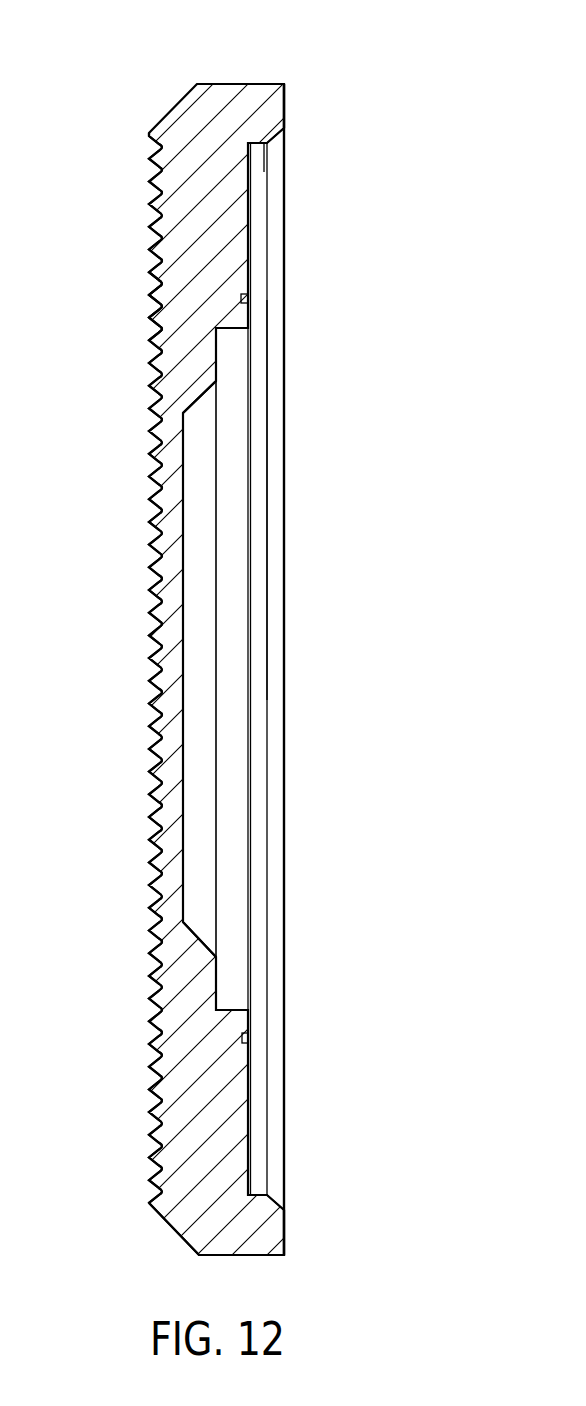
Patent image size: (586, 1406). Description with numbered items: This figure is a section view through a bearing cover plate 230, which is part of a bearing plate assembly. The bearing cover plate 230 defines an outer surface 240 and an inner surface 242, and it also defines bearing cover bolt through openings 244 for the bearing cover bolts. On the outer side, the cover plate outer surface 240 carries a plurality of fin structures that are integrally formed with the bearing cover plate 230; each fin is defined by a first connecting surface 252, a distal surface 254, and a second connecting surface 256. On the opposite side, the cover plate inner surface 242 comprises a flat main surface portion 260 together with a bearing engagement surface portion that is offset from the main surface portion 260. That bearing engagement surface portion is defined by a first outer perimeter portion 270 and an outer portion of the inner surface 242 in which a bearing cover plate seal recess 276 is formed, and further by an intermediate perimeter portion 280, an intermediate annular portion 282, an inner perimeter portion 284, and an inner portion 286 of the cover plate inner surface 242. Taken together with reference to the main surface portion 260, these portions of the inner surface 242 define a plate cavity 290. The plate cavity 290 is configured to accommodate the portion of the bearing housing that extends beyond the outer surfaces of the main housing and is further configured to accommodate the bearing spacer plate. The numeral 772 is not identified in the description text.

The bearing cover plate 230 is at (241, 73).
The outer surface 240 is at (150, 128).
The inner surface 242 is at (284, 92).
The bearing cover bolt through openings 244 is at (283, 222).
The first connecting surface 252 is at (150, 309).
The distal surface 254 is at (156, 282).
The second connecting surface 256 is at (150, 340).
The main surface portion 260 is at (302, 267).
The first outer perimeter portion 270 is at (270, 145).
The bore 772 is at (278, 182).
The bearing cover plate seal recess 276 is at (250, 298).
The intermediate perimeter portion 280 is at (232, 329).
The intermediate annular portion 282 is at (216, 384).
The inner perimeter portion 284 is at (198, 406).
The inner portion 286 is at (184, 480).
The plate cavity 290 is at (293, 521).